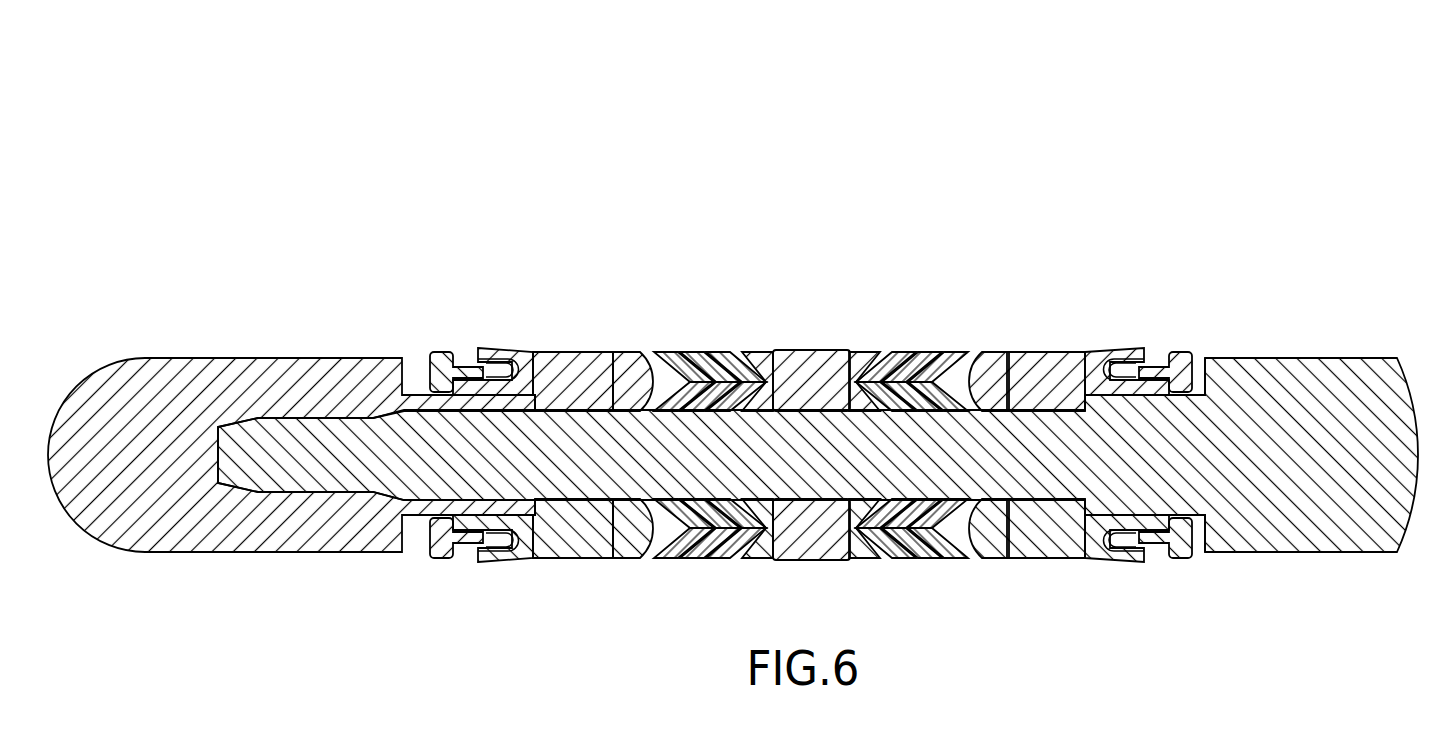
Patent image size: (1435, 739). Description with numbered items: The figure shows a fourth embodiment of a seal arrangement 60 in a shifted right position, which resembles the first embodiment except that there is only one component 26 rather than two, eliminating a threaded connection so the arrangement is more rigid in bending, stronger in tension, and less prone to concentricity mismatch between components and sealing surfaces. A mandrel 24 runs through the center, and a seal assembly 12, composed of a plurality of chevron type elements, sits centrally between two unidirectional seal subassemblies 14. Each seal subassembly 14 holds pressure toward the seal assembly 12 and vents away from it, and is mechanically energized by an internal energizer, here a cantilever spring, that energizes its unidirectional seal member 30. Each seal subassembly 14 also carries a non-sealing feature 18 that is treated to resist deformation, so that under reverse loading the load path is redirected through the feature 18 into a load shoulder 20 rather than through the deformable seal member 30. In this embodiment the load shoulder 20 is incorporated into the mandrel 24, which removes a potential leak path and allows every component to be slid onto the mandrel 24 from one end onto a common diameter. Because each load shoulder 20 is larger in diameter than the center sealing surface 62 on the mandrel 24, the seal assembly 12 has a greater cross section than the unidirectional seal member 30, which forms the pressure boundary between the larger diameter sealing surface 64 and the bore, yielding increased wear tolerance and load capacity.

The seal assembly 12 is at (750, 358).
The seal subassembly 14 is at (537, 358).
The non-sealing feature 18 is at (580, 407).
The load shoulder 20 is at (533, 513).
The mandrel 24 is at (703, 435).
The component 26 is at (355, 380).
The unidirectional seal member 30 is at (480, 350).
The seal arrangement 60 is at (733, 346).
The center sealing surface 62 is at (808, 410).
The larger diameter sealing surface 64 is at (420, 517).